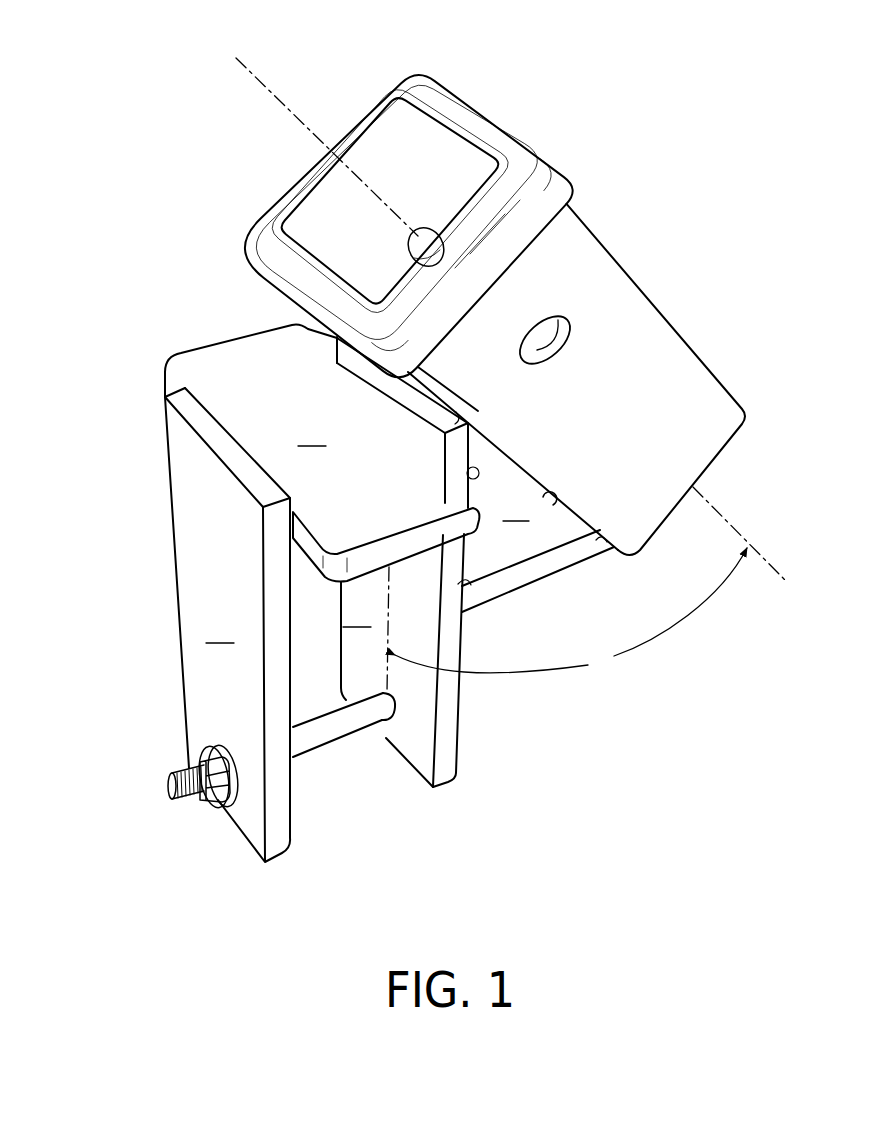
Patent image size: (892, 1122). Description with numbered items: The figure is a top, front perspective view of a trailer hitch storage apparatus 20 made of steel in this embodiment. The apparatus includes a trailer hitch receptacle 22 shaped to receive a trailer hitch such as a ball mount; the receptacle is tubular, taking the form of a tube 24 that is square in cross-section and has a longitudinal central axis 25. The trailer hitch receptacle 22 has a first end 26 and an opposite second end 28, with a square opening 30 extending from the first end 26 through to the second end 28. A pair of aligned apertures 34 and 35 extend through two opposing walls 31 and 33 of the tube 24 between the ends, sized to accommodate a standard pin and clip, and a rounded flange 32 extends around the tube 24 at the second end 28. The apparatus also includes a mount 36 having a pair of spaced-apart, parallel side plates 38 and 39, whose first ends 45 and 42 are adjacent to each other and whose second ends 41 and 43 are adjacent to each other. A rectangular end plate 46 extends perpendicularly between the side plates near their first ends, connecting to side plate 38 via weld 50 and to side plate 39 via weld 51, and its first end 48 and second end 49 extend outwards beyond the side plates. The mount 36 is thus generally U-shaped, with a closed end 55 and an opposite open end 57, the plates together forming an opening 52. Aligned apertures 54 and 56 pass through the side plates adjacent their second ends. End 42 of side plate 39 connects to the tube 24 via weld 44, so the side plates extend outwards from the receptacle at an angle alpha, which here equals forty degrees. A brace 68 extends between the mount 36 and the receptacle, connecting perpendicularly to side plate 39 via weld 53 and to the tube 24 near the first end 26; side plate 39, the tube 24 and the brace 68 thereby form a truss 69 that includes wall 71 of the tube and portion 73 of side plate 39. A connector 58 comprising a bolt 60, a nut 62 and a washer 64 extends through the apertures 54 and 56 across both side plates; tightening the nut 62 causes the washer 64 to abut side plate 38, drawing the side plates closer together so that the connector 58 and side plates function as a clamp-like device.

The trailer hitch storage apparatus 20 is at (158, 222).
The trailer hitch receptacle 22 is at (622, 253).
The tube 24 is at (648, 365).
The longitudinal central axis 25 is at (238, 57).
The first end 26 is at (752, 448).
The second end 28 is at (312, 177).
The opening 30 is at (421, 158).
The wall 31 is at (690, 407).
The rounded flange 32 is at (498, 118).
The wall 33 is at (373, 150).
The aperture 34 is at (538, 338).
The aperture 35 is at (393, 265).
The mount 36 is at (156, 543).
The side plate 38 is at (228, 663).
The side plate 39 is at (430, 721).
The second end 41 is at (275, 863).
The first end 42 is at (424, 403).
The second end 43 is at (446, 786).
The weld 44 is at (456, 412).
The first end 45 is at (223, 447).
The end plate 46 is at (300, 472).
The first end 48 is at (212, 348).
The second end 49 is at (403, 547).
The weld 50 is at (297, 506).
The weld 51 is at (282, 337).
The opening 52 is at (323, 690).
The weld 53 is at (482, 568).
The aperture 54 is at (207, 748).
The closed end 55 is at (156, 392).
The aperture 56 is at (405, 703).
The open end 57 is at (360, 860).
The connector 58 is at (160, 800).
The bolt 60 is at (318, 738).
The nut 62 is at (208, 805).
The washer 64 is at (233, 822).
The brace 68 is at (531, 538).
The truss 69 is at (534, 462).
The wall 71 is at (556, 508).
The portion 73 is at (452, 478).